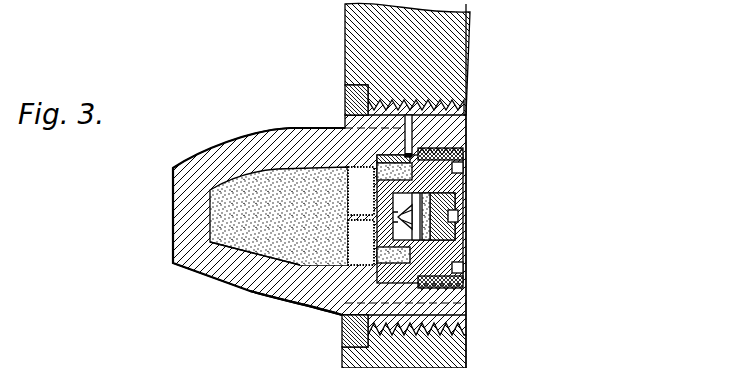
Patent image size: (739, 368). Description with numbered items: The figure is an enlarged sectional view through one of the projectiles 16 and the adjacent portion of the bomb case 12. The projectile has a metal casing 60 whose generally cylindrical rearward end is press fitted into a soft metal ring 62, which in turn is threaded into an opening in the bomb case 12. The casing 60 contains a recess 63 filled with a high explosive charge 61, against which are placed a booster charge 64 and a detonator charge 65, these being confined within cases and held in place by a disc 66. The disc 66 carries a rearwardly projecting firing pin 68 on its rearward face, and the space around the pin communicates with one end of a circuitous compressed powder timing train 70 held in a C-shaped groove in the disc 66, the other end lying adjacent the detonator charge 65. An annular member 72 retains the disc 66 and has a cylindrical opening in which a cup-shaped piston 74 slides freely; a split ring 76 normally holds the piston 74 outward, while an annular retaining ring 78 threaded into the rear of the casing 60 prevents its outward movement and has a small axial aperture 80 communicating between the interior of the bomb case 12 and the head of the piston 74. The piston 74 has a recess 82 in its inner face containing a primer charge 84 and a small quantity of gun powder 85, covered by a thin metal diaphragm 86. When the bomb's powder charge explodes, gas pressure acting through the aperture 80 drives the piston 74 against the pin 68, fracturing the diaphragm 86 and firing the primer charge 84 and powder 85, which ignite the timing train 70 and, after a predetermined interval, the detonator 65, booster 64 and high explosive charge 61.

The bomb case 12 is at (430, 57).
The projectile 16 is at (236, 137).
The metal casing 60 is at (203, 157).
The high explosive charge 61 is at (238, 202).
The soft metal ring 62 is at (343, 98).
The recess 63 is at (265, 243).
The booster charge 64 is at (318, 277).
The detonator charge 65 is at (352, 188).
The disc 66 is at (400, 272).
The firing pin 68 is at (348, 230).
The compressed powder timing train 70 is at (460, 287).
The annular member 72 is at (466, 313).
The cup-shaped piston 74 is at (466, 203).
The split ring 76 is at (466, 168).
The annular retaining ring 78 is at (466, 132).
The aperture 80 is at (466, 224).
The recess 82 is at (466, 186).
The primer charge 84 is at (466, 195).
The gun powder 85 is at (457, 213).
The thin metal diaphragm 86 is at (402, 160).